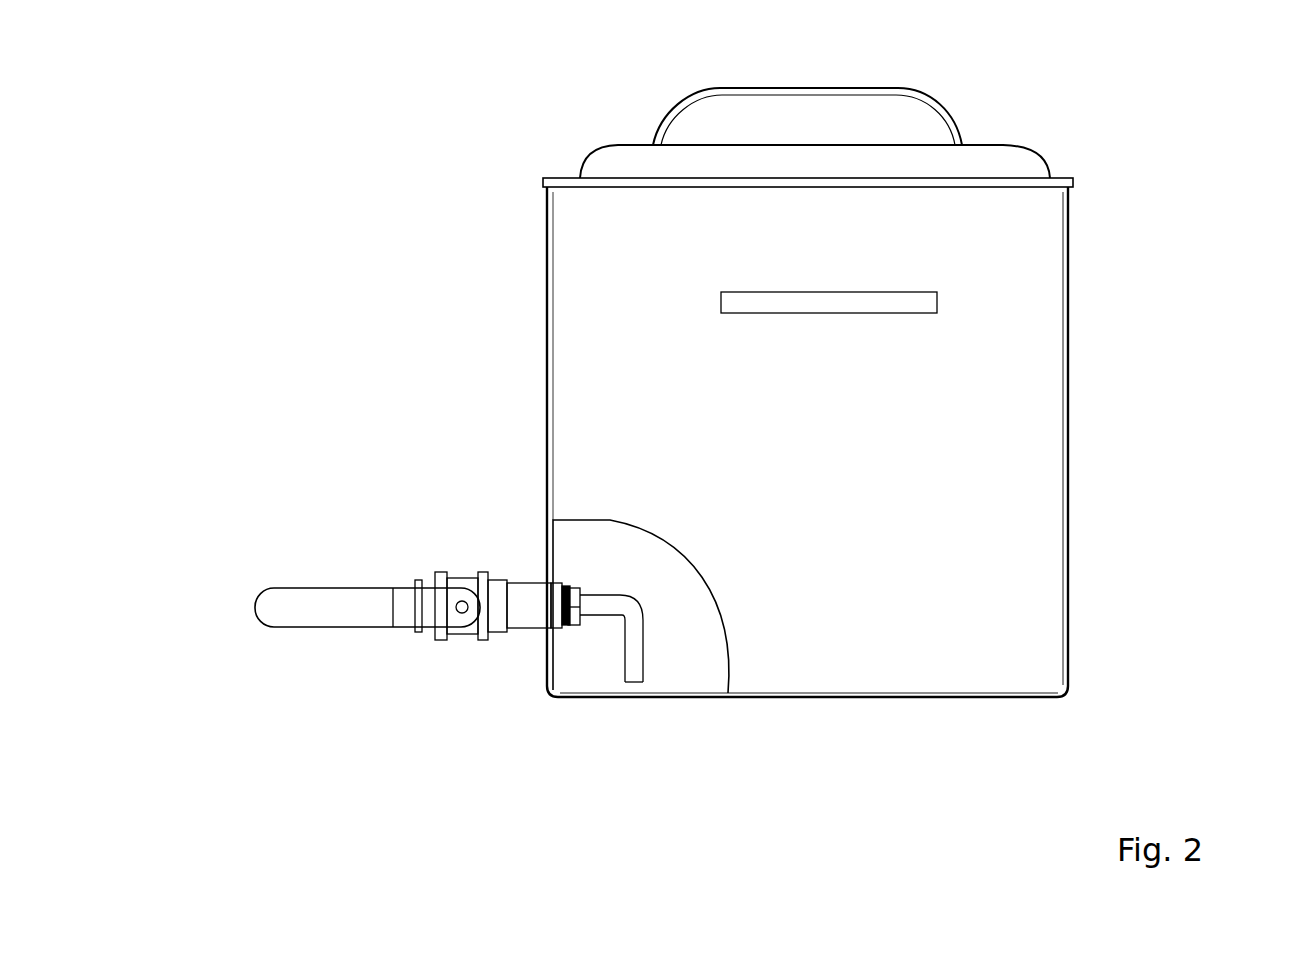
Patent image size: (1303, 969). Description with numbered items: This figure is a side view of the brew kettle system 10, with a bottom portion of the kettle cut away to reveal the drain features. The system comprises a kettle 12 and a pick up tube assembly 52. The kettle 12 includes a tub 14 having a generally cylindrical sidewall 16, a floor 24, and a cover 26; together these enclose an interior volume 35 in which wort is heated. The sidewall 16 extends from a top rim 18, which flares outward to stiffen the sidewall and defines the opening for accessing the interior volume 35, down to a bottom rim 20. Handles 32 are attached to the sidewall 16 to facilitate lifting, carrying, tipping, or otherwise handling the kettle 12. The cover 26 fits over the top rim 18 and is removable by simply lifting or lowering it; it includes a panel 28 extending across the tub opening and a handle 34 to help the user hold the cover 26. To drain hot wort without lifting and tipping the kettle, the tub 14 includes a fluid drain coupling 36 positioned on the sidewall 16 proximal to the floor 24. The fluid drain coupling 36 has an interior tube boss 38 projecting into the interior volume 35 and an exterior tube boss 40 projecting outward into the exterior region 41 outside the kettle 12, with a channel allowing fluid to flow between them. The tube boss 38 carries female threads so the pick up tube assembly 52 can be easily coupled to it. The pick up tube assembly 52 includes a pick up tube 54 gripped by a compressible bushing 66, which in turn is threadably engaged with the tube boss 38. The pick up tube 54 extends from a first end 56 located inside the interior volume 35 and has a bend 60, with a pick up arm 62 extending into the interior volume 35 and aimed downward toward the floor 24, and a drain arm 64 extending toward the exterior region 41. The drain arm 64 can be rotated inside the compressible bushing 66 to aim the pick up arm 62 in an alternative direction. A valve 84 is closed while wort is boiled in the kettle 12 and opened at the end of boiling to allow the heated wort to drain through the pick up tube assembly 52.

The brew kettle system 10 is at (322, 108).
The kettle 12 is at (524, 281).
The tub 14 is at (565, 343).
The sidewall 16 is at (844, 505).
The top rim 18 is at (1073, 191).
The bottom rim 20 is at (1052, 683).
The floor 24 is at (985, 695).
The cover 26 is at (635, 129).
The panel 28 is at (1055, 178).
The handles 32 is at (758, 302).
The handle 34 is at (740, 82).
The interior volume 35 is at (597, 533).
The fluid drain coupling 36 is at (525, 571).
The tube boss 38 is at (563, 587).
The tube boss 40 is at (528, 608).
The exterior region 41 is at (693, 465).
The pick up tube assembly 52 is at (656, 621).
The pick up tube 54 is at (645, 637).
The first end 56 is at (633, 683).
The bend 60 is at (637, 605).
The pick up arm 62 is at (633, 650).
The drain arm 64 is at (600, 605).
The compressible bushing 66 is at (567, 608).
The valve 84 is at (440, 598).